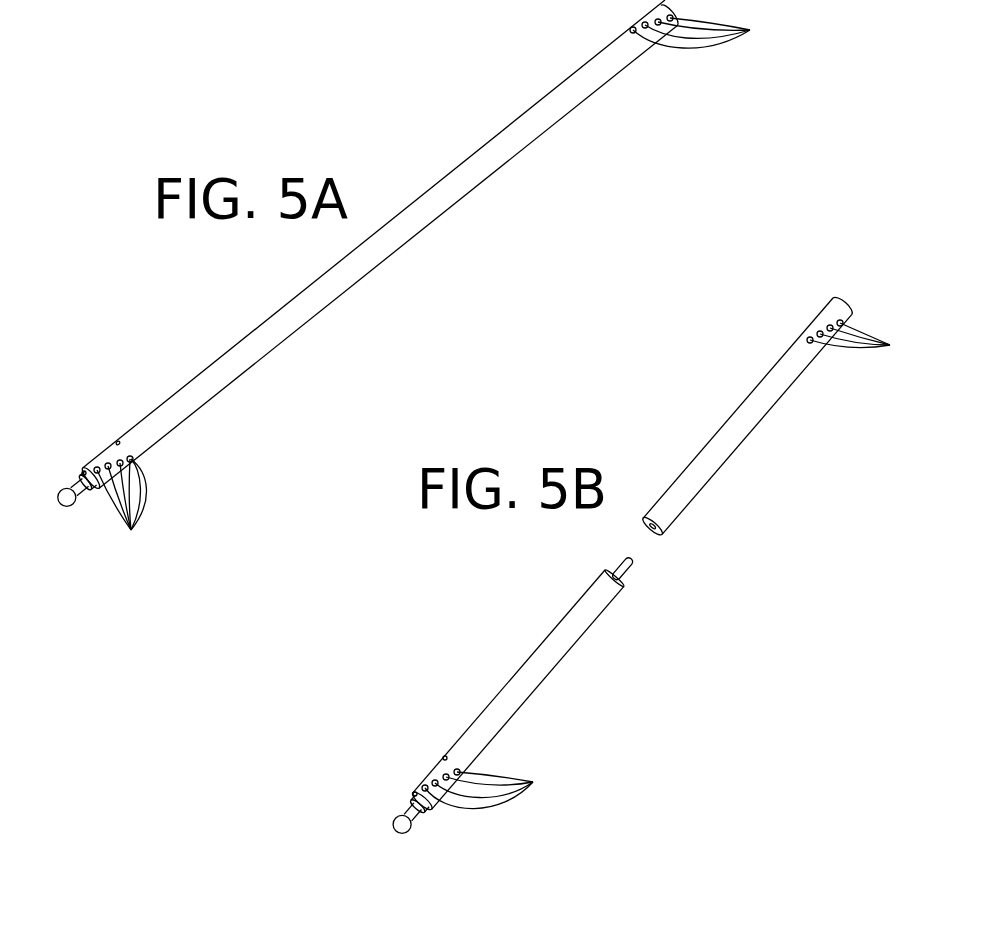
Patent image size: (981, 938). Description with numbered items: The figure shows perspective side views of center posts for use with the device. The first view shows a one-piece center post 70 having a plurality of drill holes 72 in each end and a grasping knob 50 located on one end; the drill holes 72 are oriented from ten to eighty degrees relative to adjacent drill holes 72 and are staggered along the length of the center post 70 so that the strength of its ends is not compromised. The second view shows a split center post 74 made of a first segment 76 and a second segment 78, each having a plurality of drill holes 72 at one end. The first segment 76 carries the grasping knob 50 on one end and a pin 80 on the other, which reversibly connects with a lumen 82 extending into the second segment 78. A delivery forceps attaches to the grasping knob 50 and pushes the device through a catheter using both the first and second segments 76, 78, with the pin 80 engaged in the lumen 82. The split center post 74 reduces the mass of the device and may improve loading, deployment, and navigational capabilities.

In FIG. 5A, the grasping knob 50 is at (63, 506).
In FIG. 5B, the grasping knob 50 is at (398, 833).
In FIG. 5A, the center post 70 is at (438, 142).
In FIG. 5A, the drill holes 72 is at (437, 289).
In FIG. 5B, the drill holes 72 is at (671, 564).
In FIG. 5B, the split center post 74 is at (650, 558).
In FIG. 5B, the first segment 76 is at (488, 688).
In FIG. 5B, the second segment 78 is at (755, 372).
In FIG. 5B, the pin 80 is at (616, 562).
In FIG. 5B, the lumen 82 is at (646, 536).